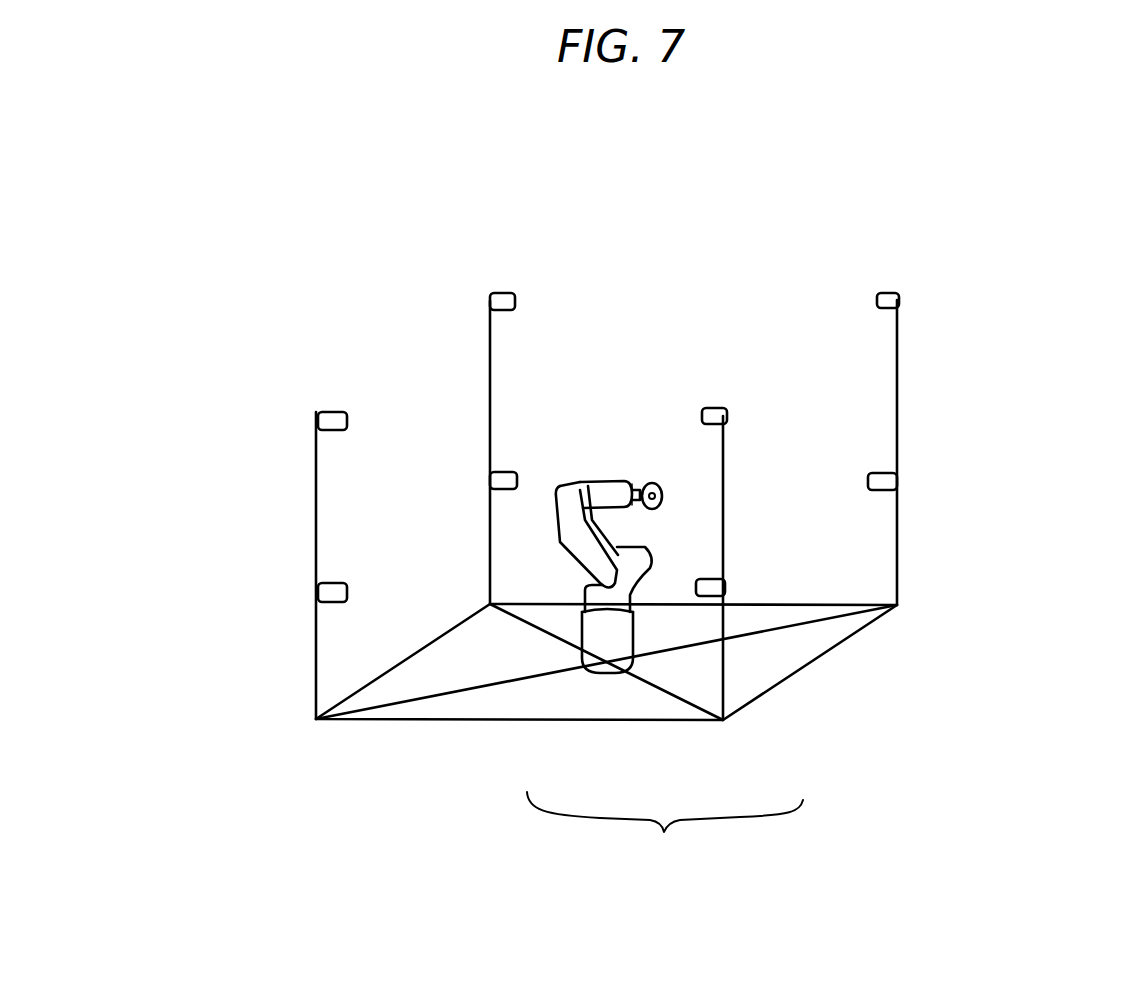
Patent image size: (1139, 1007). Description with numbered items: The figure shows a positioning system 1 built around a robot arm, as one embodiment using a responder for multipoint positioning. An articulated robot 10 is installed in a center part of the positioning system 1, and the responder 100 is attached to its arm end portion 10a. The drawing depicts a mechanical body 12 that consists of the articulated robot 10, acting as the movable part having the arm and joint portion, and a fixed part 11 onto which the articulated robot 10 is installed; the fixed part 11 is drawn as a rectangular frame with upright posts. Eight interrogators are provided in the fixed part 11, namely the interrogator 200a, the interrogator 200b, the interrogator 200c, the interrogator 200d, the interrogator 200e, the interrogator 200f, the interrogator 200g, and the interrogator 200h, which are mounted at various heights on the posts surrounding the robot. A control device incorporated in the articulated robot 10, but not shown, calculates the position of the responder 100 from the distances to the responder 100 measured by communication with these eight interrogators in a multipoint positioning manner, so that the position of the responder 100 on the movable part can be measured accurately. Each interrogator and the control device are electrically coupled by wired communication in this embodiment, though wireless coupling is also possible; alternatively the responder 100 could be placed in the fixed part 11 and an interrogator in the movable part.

The positioning system 1 is at (1047, 230).
The articulated robot 10 is at (601, 683).
The arm end portion 10a is at (636, 490).
The fixed part 11 is at (743, 672).
The mechanical body 12 is at (665, 834).
The responder 100 is at (668, 490).
The interrogator 200a is at (714, 410).
The interrogator 200b is at (888, 300).
The interrogator 200c is at (539, 260).
The interrogator 200d is at (332, 419).
The interrogator 200e is at (718, 589).
The interrogator 200f is at (880, 480).
The interrogator 200g is at (502, 474).
The interrogator 200h is at (332, 592).